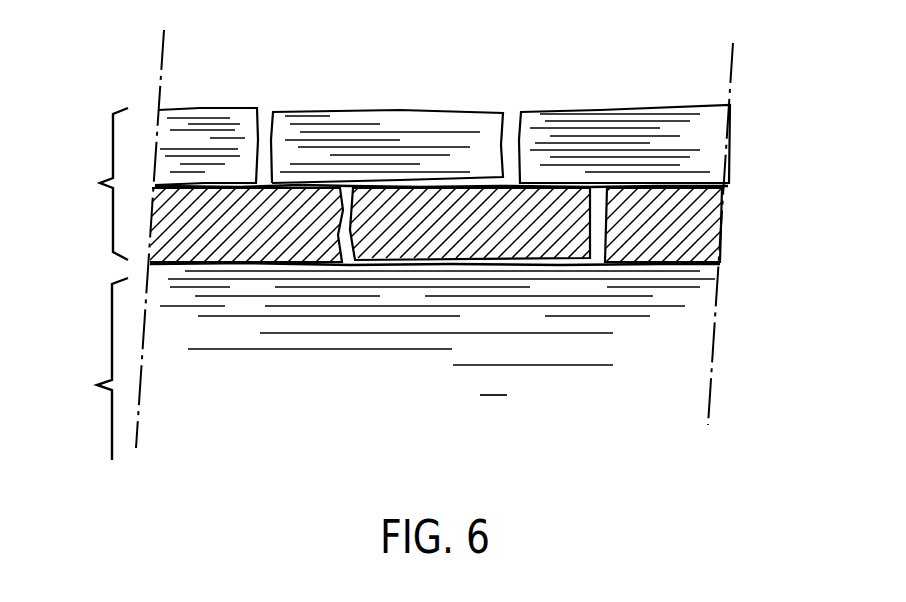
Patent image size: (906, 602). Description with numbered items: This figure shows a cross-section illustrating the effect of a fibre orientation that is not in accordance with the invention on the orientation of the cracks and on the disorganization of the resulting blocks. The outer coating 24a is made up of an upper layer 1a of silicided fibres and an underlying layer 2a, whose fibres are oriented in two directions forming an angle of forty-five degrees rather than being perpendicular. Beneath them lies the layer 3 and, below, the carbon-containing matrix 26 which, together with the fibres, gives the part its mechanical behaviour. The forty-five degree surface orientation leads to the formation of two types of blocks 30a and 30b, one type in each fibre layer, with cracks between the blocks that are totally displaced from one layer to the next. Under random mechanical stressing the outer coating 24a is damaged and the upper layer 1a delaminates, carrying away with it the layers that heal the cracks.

The upper layer 1a is at (689, 135).
The underlying layer 2a is at (689, 219).
The layer 3 is at (690, 293).
The blocks 30a is at (347, 153).
The blocks 30b is at (503, 217).
The outer coating 24a is at (73, 184).
The carbon-containing matrix 26 is at (80, 369).